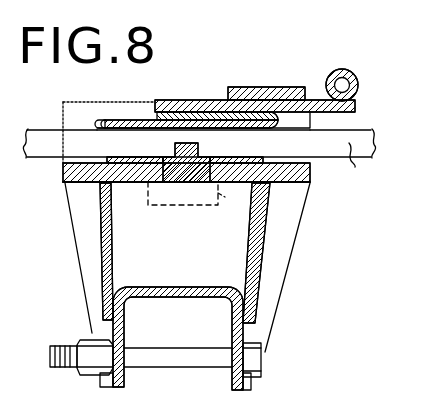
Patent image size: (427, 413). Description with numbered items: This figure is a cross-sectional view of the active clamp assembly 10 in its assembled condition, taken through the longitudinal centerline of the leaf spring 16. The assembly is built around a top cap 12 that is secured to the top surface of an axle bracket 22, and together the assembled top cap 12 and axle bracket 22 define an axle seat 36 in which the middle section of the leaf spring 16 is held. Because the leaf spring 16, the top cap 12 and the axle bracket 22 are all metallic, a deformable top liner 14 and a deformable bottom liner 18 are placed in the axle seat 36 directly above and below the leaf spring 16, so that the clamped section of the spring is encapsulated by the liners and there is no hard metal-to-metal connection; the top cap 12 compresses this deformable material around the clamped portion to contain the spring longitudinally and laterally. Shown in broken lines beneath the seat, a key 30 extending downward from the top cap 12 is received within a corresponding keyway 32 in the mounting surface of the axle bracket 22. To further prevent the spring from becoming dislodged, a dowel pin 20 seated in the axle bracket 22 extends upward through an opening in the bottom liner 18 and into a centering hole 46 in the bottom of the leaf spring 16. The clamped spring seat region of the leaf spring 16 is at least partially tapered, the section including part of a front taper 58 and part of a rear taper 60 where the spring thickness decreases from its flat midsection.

The active clamp assembly 10 is at (334, 53).
The top cap 12 is at (297, 90).
The deformable top liner 14 is at (191, 125).
The leaf spring 16 is at (215, 176).
The deformable bottom liner 18 is at (263, 157).
The dowel pin 20 is at (171, 183).
The axle bracket 22 is at (263, 240).
The key 30 is at (165, 205).
The keyway 32 is at (225, 197).
The axle seat 36 is at (108, 119).
The centering hole 46 is at (192, 135).
The front taper 58 is at (127, 119).
The rear taper 60 is at (242, 128).